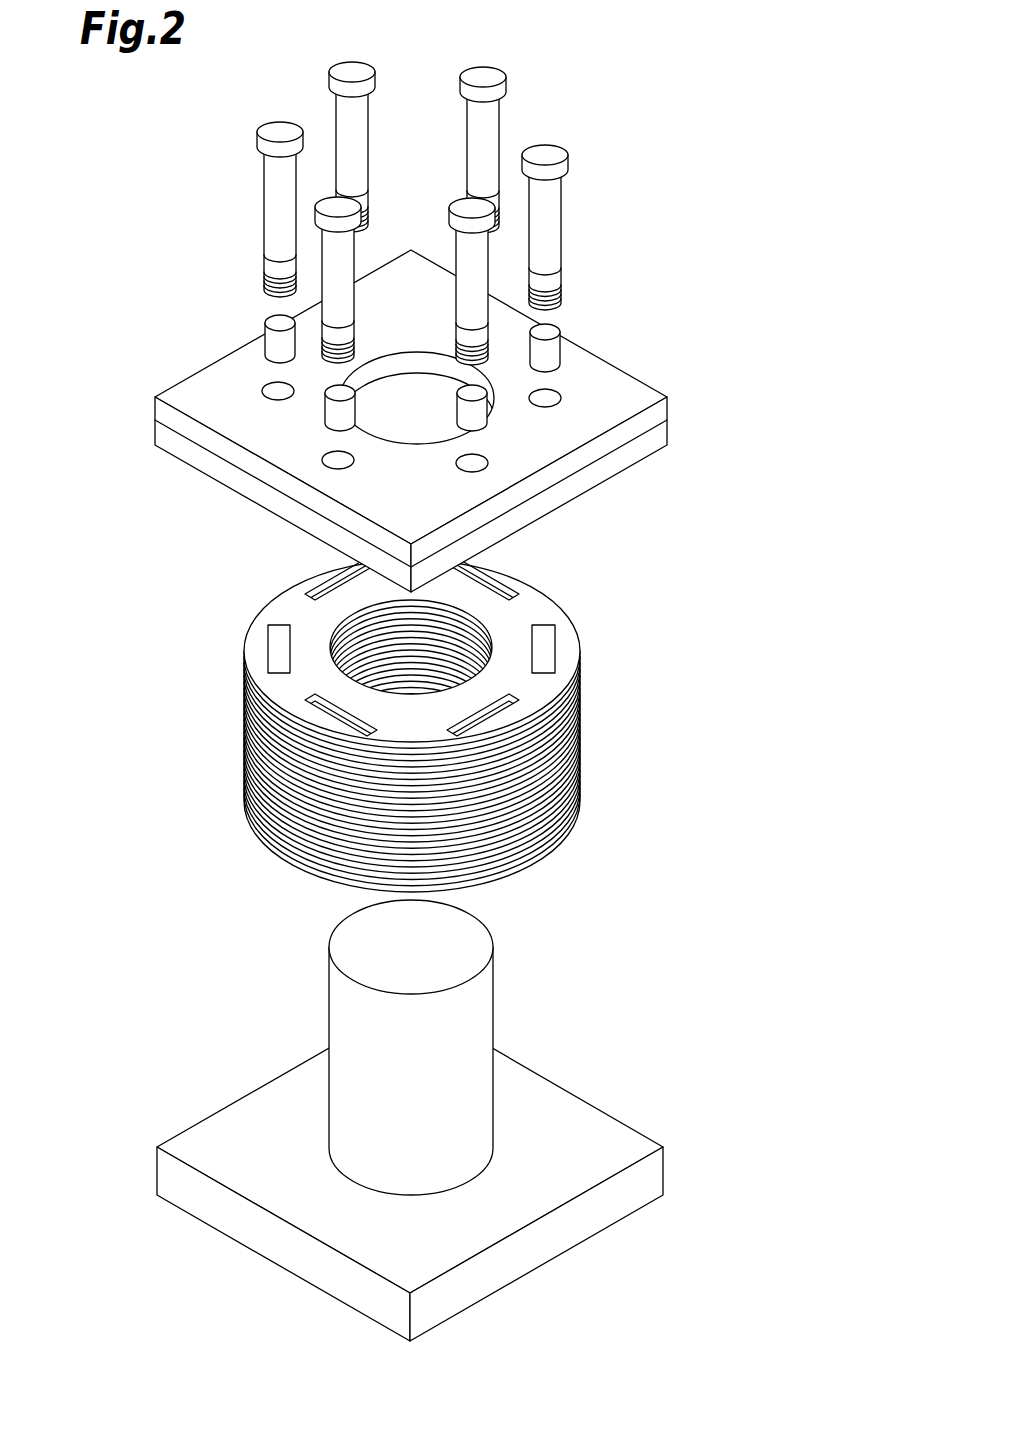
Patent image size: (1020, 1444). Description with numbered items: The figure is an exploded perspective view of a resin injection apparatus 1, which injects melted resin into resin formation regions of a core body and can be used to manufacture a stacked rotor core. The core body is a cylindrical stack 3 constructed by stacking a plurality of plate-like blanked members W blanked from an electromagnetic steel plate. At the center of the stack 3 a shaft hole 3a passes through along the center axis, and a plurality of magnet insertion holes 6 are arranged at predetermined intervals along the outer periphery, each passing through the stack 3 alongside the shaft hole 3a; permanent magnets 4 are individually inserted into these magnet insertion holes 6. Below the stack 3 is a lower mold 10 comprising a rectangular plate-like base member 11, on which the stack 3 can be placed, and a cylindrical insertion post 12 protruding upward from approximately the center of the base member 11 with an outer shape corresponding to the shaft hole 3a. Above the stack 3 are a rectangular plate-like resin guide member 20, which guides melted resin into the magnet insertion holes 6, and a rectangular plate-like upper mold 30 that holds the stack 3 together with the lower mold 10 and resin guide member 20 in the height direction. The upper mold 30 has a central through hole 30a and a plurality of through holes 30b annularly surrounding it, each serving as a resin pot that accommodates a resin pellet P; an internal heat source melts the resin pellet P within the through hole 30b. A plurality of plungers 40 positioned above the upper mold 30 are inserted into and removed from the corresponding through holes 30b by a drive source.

The resin injection apparatus 1 is at (742, 138).
The stack 3 is at (457, 728).
The shaft hole 3a is at (372, 652).
The permanent magnet 4 is at (545, 650).
The magnet insertion hole 6 is at (498, 588).
The lower mold 10 is at (462, 1120).
The base member 11 is at (578, 1113).
The insertion post 12 is at (483, 1005).
The resin guide member 20 is at (665, 462).
The upper mold 30 is at (433, 385).
The through hole 30a is at (416, 360).
The through hole 30b is at (280, 388).
The plunger 40 is at (525, 78).
The resin pellet P is at (545, 352).
The blanked member W is at (286, 862).